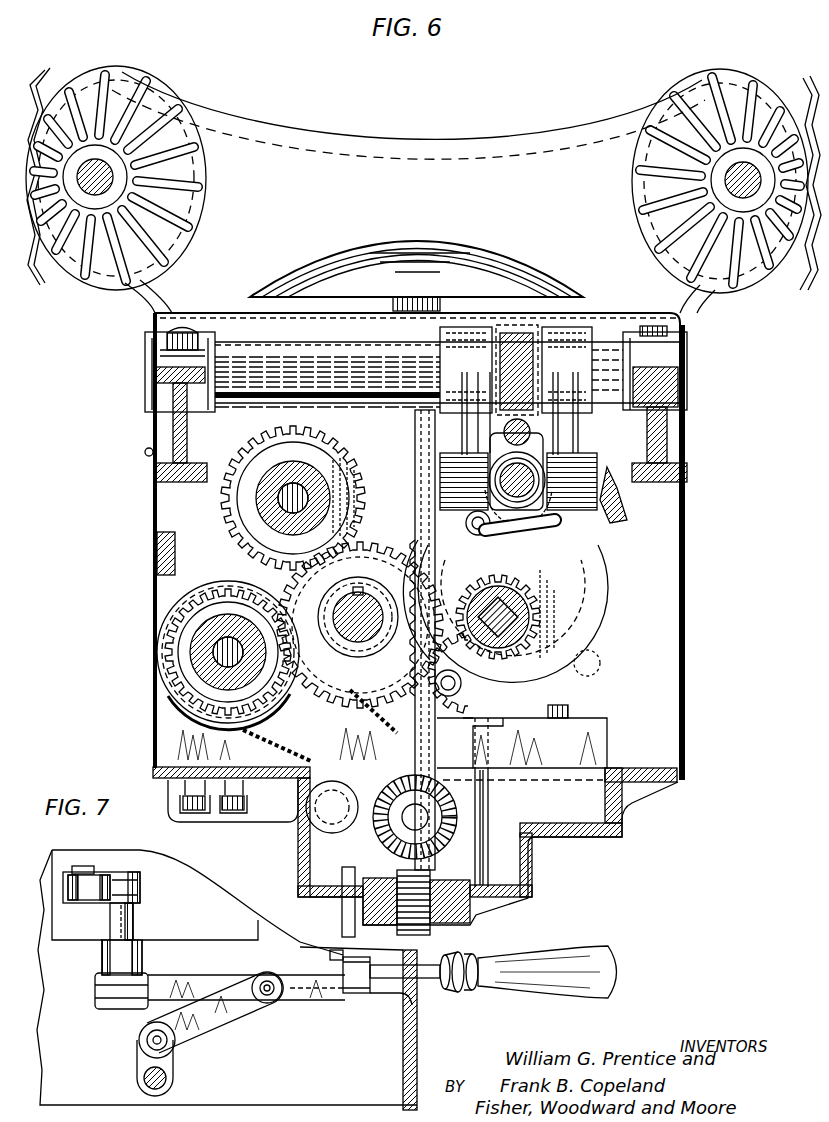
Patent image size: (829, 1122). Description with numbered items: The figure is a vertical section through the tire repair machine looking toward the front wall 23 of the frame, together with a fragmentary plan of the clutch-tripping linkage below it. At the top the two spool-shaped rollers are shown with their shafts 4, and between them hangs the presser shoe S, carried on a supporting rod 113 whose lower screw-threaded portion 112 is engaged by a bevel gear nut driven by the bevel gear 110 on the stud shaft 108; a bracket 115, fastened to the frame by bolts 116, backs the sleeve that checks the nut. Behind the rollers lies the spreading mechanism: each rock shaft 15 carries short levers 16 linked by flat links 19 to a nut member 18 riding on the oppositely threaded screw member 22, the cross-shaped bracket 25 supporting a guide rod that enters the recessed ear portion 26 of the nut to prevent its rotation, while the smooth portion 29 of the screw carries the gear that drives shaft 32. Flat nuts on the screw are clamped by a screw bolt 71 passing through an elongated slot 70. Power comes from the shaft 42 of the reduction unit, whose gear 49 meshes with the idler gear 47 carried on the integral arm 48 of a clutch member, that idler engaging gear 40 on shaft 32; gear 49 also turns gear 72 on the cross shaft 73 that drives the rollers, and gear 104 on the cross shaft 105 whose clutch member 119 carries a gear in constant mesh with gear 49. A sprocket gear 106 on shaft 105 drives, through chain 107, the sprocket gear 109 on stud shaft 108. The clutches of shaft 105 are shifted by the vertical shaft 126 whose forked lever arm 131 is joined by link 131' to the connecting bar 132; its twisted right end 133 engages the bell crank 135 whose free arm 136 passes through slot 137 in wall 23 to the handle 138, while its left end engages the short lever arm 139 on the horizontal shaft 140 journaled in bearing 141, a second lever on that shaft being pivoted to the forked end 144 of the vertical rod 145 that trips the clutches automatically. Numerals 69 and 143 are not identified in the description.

In FIG. 6, the shaft 4 is at (110, 176).
In FIG. 6, the presser shoe S is at (440, 252).
In FIG. 6, the rock shaft 15 is at (232, 398).
In FIG. 6, the short lever 16 is at (463, 437).
In FIG. 6, the nut member 18 is at (500, 472).
In FIG. 6, the link 19 is at (627, 510).
In FIG. 6, the screw member 22 is at (466, 521).
In FIG. 6, the cross-shaped bracket 25 is at (520, 330).
In FIG. 6, the recessed ear portion 26 is at (590, 342).
In FIG. 6, the smooth portion 29 is at (520, 425).
In FIG. 6, the shaft 32 is at (512, 612).
In FIG. 6, the gear 40 is at (525, 600).
In FIG. 6, the shaft of reduction unit 42 is at (358, 590).
In FIG. 6, the idler gear 47 is at (480, 704).
In FIG. 6, the integral arm 48 is at (530, 660).
In FIG. 6, the gear 49 is at (370, 560).
In FIG. 6, the arc guide 69 is at (513, 600).
In FIG. 6, the elongated circular slot 70 is at (575, 538).
In FIG. 6, the screw bolt 71 is at (470, 530).
In FIG. 6, the gear 72 is at (325, 460).
In FIG. 6, the cross shaft 73 is at (280, 505).
In FIG. 6, the gear 104 is at (282, 700).
In FIG. 6, the cross shaft 105 is at (215, 652).
In FIG. 6, the sprocket gear 106 is at (178, 703).
In FIG. 6, the chain 107 is at (278, 747).
In FIG. 6, the stud shaft 108 is at (428, 808).
In FIG. 6, the sprocket gear 109 is at (395, 845).
In FIG. 6, the bevel gear 110 is at (440, 820).
In FIG. 6, the screw-threaded portion 112 is at (432, 878).
In FIG. 6, the supporting rod 113 is at (415, 456).
In FIG. 6, the bracket 115 is at (608, 729).
In FIG. 6, the bolt 116 is at (560, 705).
In FIG. 6, the clutch member 119 is at (205, 596).
In FIG. 6, the vertical rod 145 is at (342, 913).
In FIG. 7, the front wall 23 is at (418, 1052).
In FIG. 7, the vertical shaft 126 is at (167, 1078).
In FIG. 7, the forked lever arm 131 is at (135, 1059).
In FIG. 7, the link 131' is at (215, 1012).
In FIG. 7, the connecting bar 132 is at (236, 975).
In FIG. 7, the twisted right end 133 is at (343, 962).
In FIG. 7, the bell crank 135 is at (386, 978).
In FIG. 7, the free arm 136 is at (412, 990).
In FIG. 7, the slot 137 is at (372, 962).
In FIG. 7, the handle 138 is at (548, 958).
In FIG. 7, the short lever arm 139 is at (95, 985).
In FIG. 7, the short horizontal shaft 140 is at (133, 918).
In FIG. 7, the bearing 141 is at (110, 955).
In FIG. 7, the bolt 143 is at (140, 893).
In FIG. 7, the forked end 144 is at (78, 872).